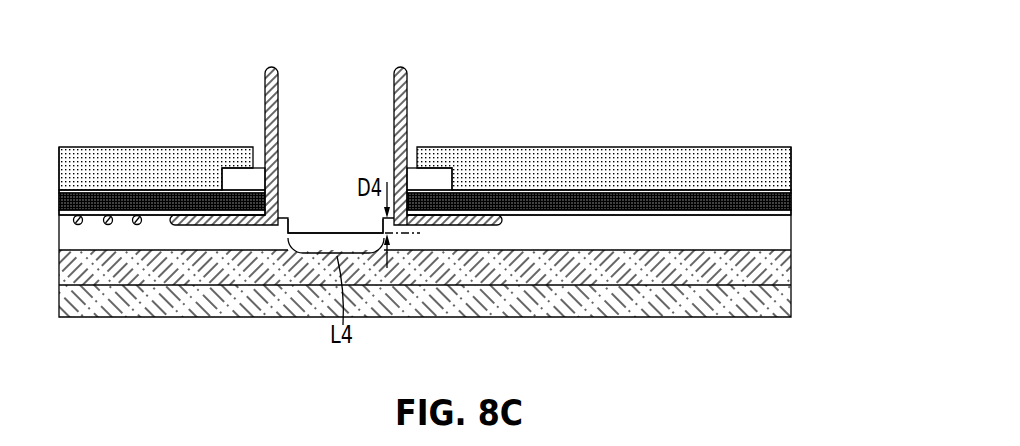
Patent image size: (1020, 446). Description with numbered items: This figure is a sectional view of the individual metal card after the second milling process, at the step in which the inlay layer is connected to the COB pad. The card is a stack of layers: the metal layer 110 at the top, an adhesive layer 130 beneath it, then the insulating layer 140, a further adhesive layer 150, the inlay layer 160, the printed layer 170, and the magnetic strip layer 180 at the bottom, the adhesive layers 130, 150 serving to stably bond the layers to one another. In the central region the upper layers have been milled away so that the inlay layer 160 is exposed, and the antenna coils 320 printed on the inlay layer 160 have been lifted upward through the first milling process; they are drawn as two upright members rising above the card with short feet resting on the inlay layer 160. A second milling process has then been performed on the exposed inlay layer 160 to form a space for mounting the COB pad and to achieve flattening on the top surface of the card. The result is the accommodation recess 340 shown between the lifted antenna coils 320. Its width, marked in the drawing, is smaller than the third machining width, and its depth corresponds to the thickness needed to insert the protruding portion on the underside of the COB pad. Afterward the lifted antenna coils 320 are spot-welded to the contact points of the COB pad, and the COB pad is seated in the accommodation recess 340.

The metal layer 110 is at (787, 158).
The adhesive layer 130 is at (789, 189).
The insulating layer 140 is at (789, 200).
The adhesive layer 150 is at (789, 215).
The inlay layer 160 is at (783, 236).
The printed layer 170 is at (778, 268).
The magnetic strip layer 180 is at (778, 300).
The antenna coils 320 is at (407, 100).
The accommodation recess 340 is at (331, 216).